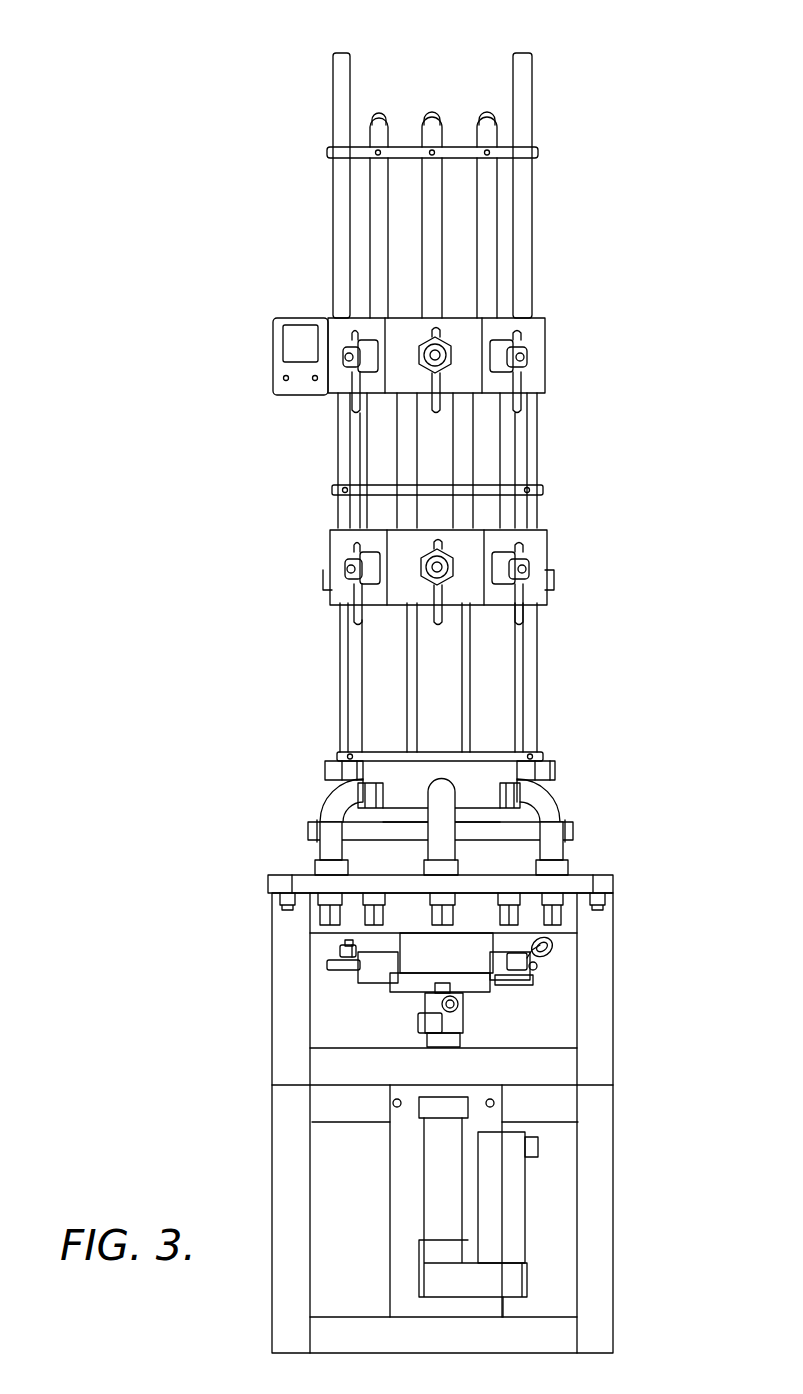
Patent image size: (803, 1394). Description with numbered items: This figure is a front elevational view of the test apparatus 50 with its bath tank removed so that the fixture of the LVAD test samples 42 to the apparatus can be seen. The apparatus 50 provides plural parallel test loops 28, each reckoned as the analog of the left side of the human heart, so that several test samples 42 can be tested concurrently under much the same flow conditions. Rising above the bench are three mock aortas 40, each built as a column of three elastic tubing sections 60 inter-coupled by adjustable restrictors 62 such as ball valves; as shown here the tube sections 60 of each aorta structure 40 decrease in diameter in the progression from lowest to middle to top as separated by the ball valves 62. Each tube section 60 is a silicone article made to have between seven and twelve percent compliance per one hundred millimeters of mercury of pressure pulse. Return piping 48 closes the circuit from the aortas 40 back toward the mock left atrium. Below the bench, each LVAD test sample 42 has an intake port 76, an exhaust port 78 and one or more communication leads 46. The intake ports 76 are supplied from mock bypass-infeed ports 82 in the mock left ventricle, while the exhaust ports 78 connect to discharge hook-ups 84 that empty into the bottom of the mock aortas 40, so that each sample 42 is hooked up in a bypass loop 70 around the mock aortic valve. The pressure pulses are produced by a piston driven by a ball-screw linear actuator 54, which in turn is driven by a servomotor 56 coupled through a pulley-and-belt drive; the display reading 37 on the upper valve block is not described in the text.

The test apparatus 50 is at (118, 243).
The test loop 28 is at (488, 210).
The mock aorta 40 is at (378, 275).
The return loop 48 is at (375, 118).
The elastic tubing section 60 is at (377, 434).
The adjustable restrictor 62 is at (375, 355).
The display reading 37 is at (300, 356).
The discharge hook-up 84 is at (471, 800).
The bypass loop 70 is at (416, 818).
The mock bypass-infeed port 82 is at (512, 915).
The exhaust port 78 is at (547, 942).
The communication lead 46 is at (533, 968).
The intake port 76 is at (507, 942).
The LVAD test sample 42 is at (427, 1037).
The ball-screw linear actuator 54 is at (455, 1178).
The servomotor 56 is at (511, 1208).